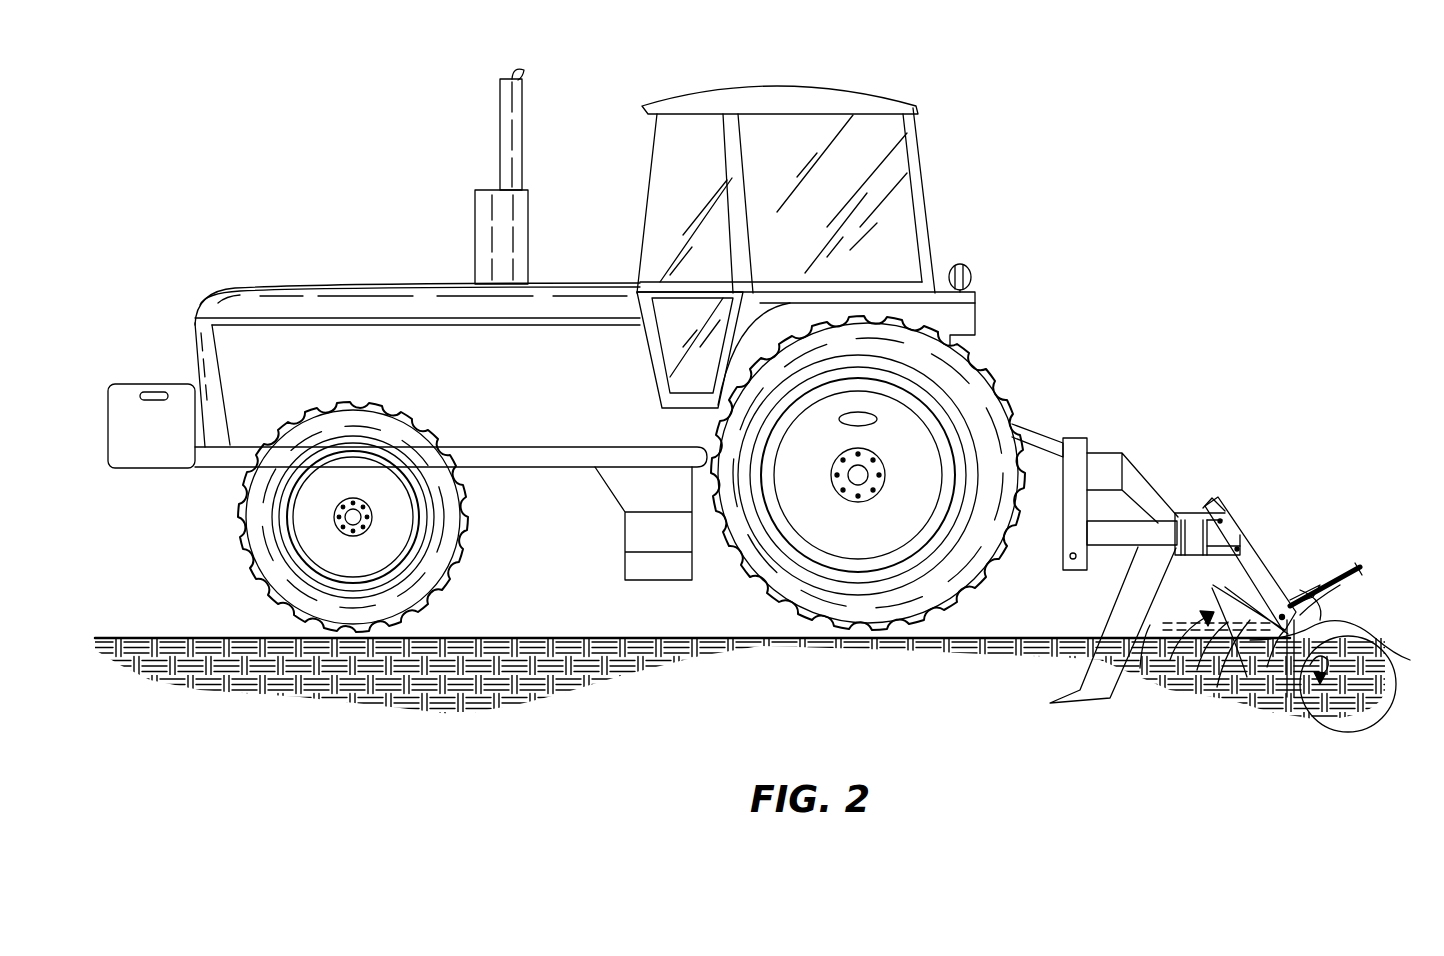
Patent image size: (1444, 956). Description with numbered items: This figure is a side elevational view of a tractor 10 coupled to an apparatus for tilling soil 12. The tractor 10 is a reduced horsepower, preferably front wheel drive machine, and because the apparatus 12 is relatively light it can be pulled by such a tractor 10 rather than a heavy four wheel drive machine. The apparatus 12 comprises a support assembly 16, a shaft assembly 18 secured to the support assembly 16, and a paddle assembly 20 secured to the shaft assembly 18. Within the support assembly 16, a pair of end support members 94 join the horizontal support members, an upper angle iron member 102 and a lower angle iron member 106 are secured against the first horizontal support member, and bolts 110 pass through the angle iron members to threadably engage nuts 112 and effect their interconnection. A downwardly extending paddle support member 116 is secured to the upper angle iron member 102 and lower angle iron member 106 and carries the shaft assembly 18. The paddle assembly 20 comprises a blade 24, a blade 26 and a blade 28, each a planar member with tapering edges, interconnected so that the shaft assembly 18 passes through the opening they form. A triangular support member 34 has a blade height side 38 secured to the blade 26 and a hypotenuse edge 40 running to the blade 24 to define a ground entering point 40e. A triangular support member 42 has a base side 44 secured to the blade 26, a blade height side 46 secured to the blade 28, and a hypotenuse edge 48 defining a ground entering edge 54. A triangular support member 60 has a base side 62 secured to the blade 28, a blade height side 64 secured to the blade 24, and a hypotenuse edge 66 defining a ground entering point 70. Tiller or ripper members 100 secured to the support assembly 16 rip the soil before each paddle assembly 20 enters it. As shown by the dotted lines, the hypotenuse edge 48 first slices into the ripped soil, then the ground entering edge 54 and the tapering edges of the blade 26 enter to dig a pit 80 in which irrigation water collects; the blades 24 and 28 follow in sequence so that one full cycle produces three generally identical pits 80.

The tractor 10 is at (380, 165).
The apparatus for tilling soil 12 is at (1170, 298).
The support assembly 16 is at (1055, 386).
The shaft assembly 18 is at (1313, 620).
The paddle assembly 20 is at (1326, 490).
The blade 24 is at (1362, 567).
The blade 26 is at (1247, 572).
The blade 28 is at (1283, 700).
The triangular support member 34 is at (1348, 568).
The blade height side 38 is at (1273, 597).
The hypotenuse edge 40 is at (1305, 577).
The ground entering edge or point 40e is at (1350, 562).
The triangular support member 42 is at (1217, 687).
The base side 44 is at (1247, 677).
The blade height side 46 is at (1267, 667).
The hypotenuse edge 48 is at (1197, 670).
The ground entering edge 54 is at (1140, 668).
The triangular support member 60 is at (1365, 640).
The base side 62 is at (1320, 720).
The blade height side 64 is at (1320, 594).
The hypotenuse edge 66 is at (1373, 667).
The ground entering edge or point 70 is at (1293, 677).
The pits or reservoirs 80 is at (1300, 697).
The end support members 94 is at (1139, 540).
The tiller or ripper members 100 is at (1120, 640).
The upper angle iron member 102 is at (1183, 511).
The lower angle iron member 106 is at (1118, 604).
The bolts 110 is at (1218, 520).
The nuts 112 is at (1237, 541).
The downwardly extending paddle support members 116 is at (1218, 506).